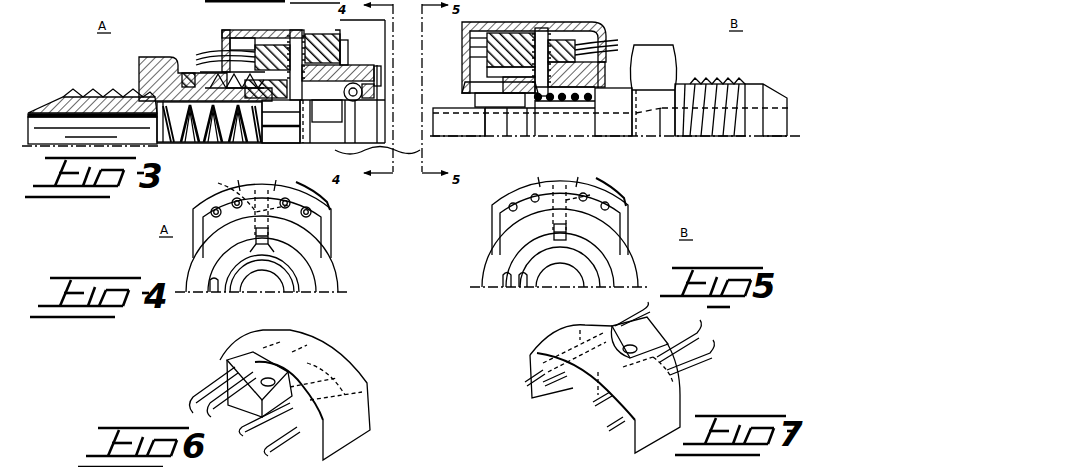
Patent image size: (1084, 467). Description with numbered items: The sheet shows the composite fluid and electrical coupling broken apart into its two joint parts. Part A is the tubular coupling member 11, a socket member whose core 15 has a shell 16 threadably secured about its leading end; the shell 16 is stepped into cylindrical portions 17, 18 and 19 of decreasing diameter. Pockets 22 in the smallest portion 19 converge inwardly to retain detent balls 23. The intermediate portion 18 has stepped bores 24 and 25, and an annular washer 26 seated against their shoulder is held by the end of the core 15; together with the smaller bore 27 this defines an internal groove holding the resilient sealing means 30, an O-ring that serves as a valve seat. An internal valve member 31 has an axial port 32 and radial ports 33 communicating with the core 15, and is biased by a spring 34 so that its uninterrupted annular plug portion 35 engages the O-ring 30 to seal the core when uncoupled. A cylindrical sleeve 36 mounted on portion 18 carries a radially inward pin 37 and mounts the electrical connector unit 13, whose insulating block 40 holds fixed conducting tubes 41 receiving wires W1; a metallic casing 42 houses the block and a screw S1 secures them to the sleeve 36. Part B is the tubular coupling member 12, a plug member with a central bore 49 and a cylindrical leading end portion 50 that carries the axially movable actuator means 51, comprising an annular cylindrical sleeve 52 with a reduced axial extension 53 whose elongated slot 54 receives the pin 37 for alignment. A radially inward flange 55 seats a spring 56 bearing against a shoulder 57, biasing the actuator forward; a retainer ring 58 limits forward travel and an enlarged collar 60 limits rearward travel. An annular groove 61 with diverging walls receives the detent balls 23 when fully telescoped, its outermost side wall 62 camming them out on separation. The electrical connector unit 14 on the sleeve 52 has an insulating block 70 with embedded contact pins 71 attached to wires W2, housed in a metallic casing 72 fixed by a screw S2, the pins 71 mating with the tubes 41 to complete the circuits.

In FIG. 3, the tubular coupling member 11 is at (54, 95).
In FIG. 4, the tubular coupling member 11 is at (183, 258).
In FIG. 3, the core 15 is at (140, 83).
In FIG. 3, the electrical connector unit 13 is at (218, 28).
In FIG. 4, the electrical connector unit 13 is at (191, 208).
In FIG. 3, the wires W1 is at (200, 50).
In FIG. 6, the wires W1 is at (246, 425).
In FIG. 3, the cylindrical portion 17 is at (205, 68).
In FIG. 3, the shell 16 is at (195, 64).
In FIG. 4, the shell 16 is at (213, 294).
In FIG. 3, the metallic casing 42 is at (248, 34).
In FIG. 4, the metallic casing 42 is at (333, 226).
In FIG. 3, the conducting tubes 41 is at (256, 44).
In FIG. 4, the conducting tubes 41 is at (326, 202).
In FIG. 6, the conducting tubes 41 is at (350, 370).
In FIG. 3, the screw S1 is at (300, 30).
In FIG. 4, the screw S1 is at (230, 182).
In FIG. 3, the intermediate cylindrical portion 18 is at (300, 38).
In FIG. 3, the insulating block 40 is at (342, 46).
In FIG. 6, the insulating block 40 is at (326, 357).
In FIG. 3, the cylindrical portion 19 is at (350, 58).
In FIG. 3, the cylindrical sleeve 36 is at (352, 68).
In FIG. 4, the cylindrical sleeve 36 is at (340, 280).
In FIG. 3, the pin 37 is at (380, 76).
In FIG. 4, the pin 37 is at (272, 240).
In FIG. 3, the detent balls 23 is at (335, 92).
In FIG. 4, the detent balls 23 is at (328, 246).
In FIG. 3, the pockets 22 is at (340, 110).
In FIG. 3, the bore 25 is at (338, 73).
In FIG. 3, the bore 24 is at (209, 122).
In FIG. 3, the annular washer 26 is at (272, 111).
In FIG. 3, the spring 34 is at (203, 143).
In FIG. 3, the resilient sealing means 30 is at (260, 143).
In FIG. 3, the valve member 31 is at (275, 136).
In FIG. 4, the valve member 31 is at (276, 292).
In FIG. 3, the annular plug portion 35 is at (288, 138).
In FIG. 3, the bore 27 is at (318, 138).
In FIG. 3, the radial ports 33 is at (340, 143).
In FIG. 4, the axial port 32 is at (262, 292).
In FIG. 3, the insulating block 70 is at (461, 36).
In FIG. 5, the insulating block 70 is at (607, 220).
In FIG. 7, the insulating block 70 is at (580, 388).
In FIG. 3, the contact pins 71 is at (468, 50).
In FIG. 5, the contact pins 71 is at (622, 192).
In FIG. 7, the contact pins 71 is at (606, 408).
In FIG. 3, the elongated slot 54 is at (535, 72).
In FIG. 5, the elongated slot 54 is at (550, 242).
In FIG. 3, the axial extension 53 is at (462, 86).
In FIG. 5, the axial extension 53 is at (508, 288).
In FIG. 3, the cylindrical leading end portion 50 is at (452, 106).
In FIG. 5, the cylindrical leading end portion 50 is at (526, 290).
In FIG. 3, the flange 55 is at (516, 78).
In FIG. 3, the annular groove 61 is at (496, 106).
In FIG. 3, the outermost side wall 62 is at (490, 137).
In FIG. 3, the retainer ring 58 is at (526, 138).
In FIG. 3, the central bore 49 is at (560, 128).
In FIG. 5, the central bore 49 is at (570, 287).
In FIG. 3, the spring 56 is at (566, 108).
In FIG. 3, the shoulder 57 is at (608, 138).
In FIG. 3, the screw S2 is at (536, 27).
In FIG. 5, the screw S2 is at (579, 197).
In FIG. 3, the metallic casing 72 is at (560, 30).
In FIG. 5, the metallic casing 72 is at (624, 214).
In FIG. 3, the wires W2 is at (612, 62).
In FIG. 7, the wires W2 is at (706, 330).
In FIG. 3, the actuator means 51 is at (622, 48).
In FIG. 5, the actuator means 51 is at (633, 272).
In FIG. 3, the annular cylindrical sleeve 52 is at (636, 52).
In FIG. 3, the enlarged collar 60 is at (673, 50).
In FIG. 3, the tubular coupling member 12 is at (745, 81).
In FIG. 5, the tubular coupling member 12 is at (487, 250).
In FIG. 5, the electrical connector unit 14 is at (490, 207).